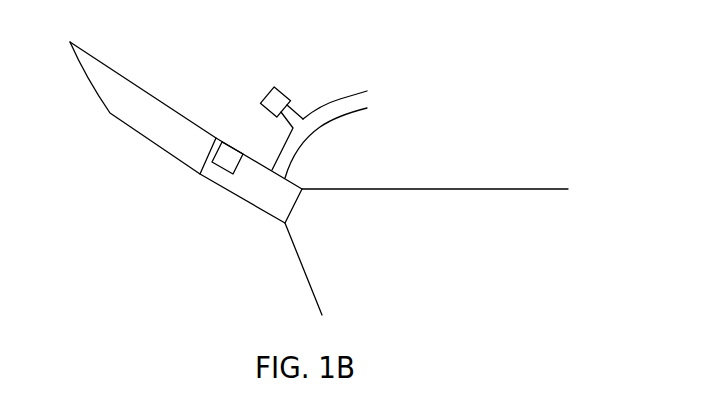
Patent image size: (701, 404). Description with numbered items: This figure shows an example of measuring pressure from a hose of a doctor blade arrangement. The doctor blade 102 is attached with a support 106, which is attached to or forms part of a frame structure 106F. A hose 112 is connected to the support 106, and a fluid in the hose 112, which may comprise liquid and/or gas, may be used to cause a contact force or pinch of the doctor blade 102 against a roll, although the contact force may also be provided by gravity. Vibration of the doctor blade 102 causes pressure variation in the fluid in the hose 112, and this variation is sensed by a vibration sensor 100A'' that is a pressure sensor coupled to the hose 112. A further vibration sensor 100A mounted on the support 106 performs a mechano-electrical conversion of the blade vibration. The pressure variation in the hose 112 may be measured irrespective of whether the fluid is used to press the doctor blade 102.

The doctor blade 102 is at (93, 56).
The support 106 is at (225, 190).
The vibration sensor 100A is at (206, 115).
The vibration sensor 100A'' is at (263, 67).
The hose 112 is at (333, 98).
The frame structure 106F is at (545, 188).